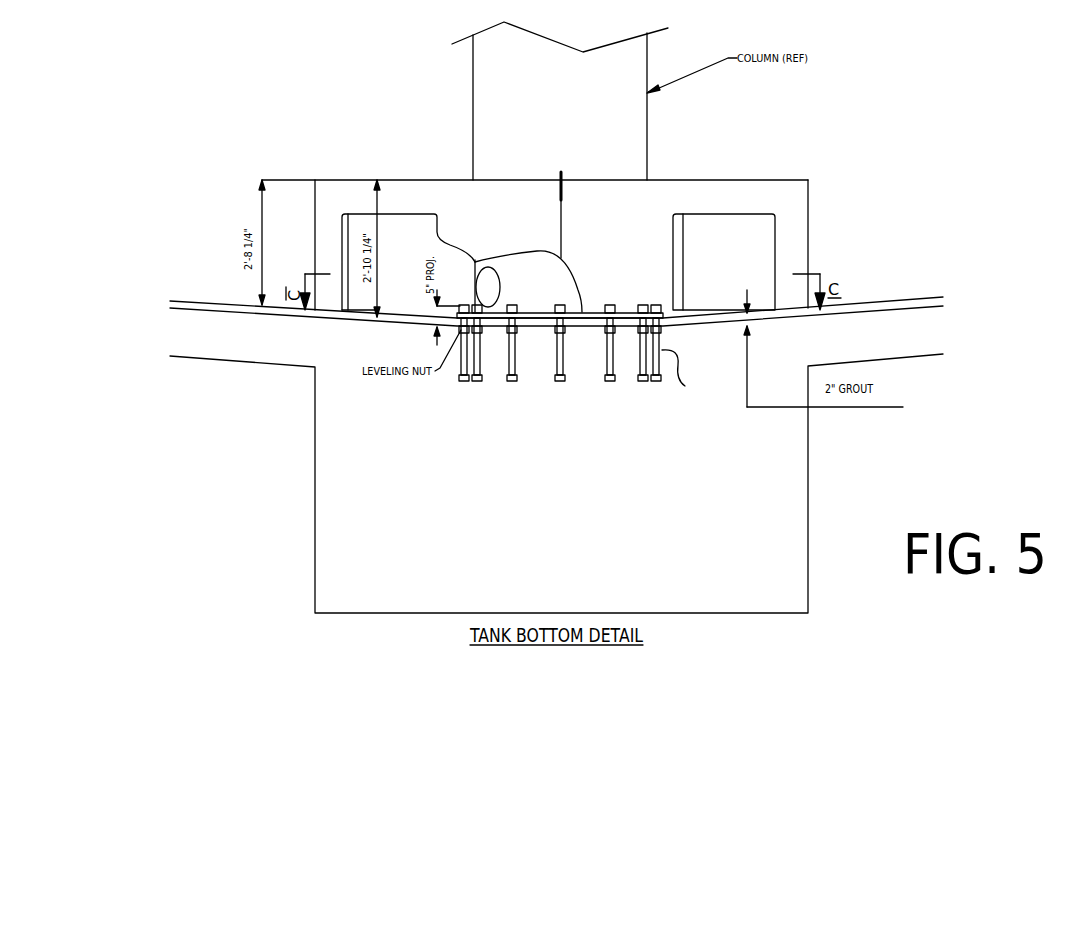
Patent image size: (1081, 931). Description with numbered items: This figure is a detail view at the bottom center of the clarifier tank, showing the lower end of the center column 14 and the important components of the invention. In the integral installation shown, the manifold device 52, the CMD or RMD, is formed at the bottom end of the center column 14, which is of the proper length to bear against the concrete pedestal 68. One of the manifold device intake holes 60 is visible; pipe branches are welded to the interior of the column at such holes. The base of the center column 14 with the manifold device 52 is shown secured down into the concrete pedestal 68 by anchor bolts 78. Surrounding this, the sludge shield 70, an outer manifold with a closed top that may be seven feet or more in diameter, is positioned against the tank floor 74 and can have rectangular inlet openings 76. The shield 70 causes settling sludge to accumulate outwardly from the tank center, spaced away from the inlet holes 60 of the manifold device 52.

The center column 14 is at (638, 128).
The sludge shield 70 is at (792, 187).
The rectangular inlet openings 76 is at (740, 255).
The manifold device 52 is at (537, 288).
The inlet holes 60 is at (492, 288).
The anchor bolts 78 is at (613, 368).
The tank floor 74 is at (198, 296).
The concrete pedestal 68 is at (768, 475).